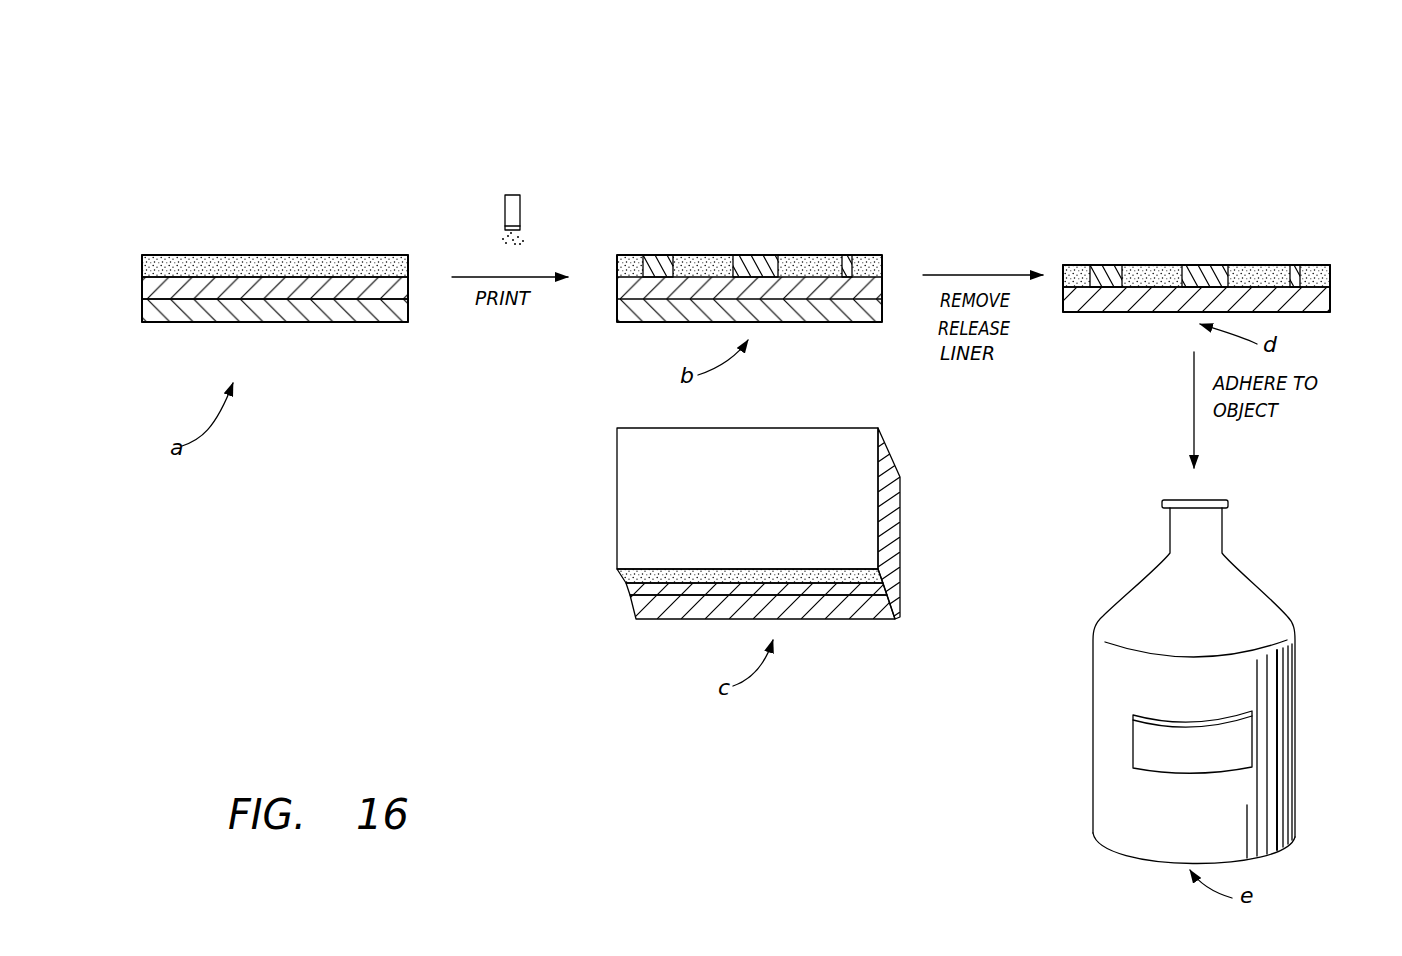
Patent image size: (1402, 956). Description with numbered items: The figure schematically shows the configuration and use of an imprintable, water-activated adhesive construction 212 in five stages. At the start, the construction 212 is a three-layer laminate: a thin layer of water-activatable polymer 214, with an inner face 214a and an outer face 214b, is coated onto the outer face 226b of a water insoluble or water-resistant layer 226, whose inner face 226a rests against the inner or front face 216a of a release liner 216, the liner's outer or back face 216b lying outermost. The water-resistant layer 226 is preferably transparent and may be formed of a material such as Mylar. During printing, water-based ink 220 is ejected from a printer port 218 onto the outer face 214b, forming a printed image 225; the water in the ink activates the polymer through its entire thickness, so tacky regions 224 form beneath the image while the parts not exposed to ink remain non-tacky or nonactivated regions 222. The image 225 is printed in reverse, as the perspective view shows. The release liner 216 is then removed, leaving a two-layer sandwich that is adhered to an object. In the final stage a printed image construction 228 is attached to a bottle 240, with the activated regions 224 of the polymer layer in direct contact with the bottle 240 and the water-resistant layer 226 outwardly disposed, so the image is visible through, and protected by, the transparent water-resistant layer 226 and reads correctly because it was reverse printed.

The imprintable adhesive construction 212 is at (148, 249).
The layer of water-activatable polymer 214 is at (142, 266).
The inner face 214a is at (370, 280).
The outer face 214b is at (360, 258).
The release liner 216 is at (397, 317).
The inner or front face 216a is at (306, 299).
The outer or back face 216b is at (292, 323).
The printer port 218 is at (523, 206).
The water-based ink 220 is at (527, 242).
The non-tacky or nonactivated regions 222 is at (633, 256).
The tacky regions 224 is at (658, 254).
The printed image 225 is at (630, 500).
The layer of water insoluble or water-resistant material 226 is at (142, 289).
The inner face 226a is at (360, 304).
The outer face 226b is at (205, 277).
The printed image construction 228 is at (1133, 768).
The bottle 240 is at (1292, 823).